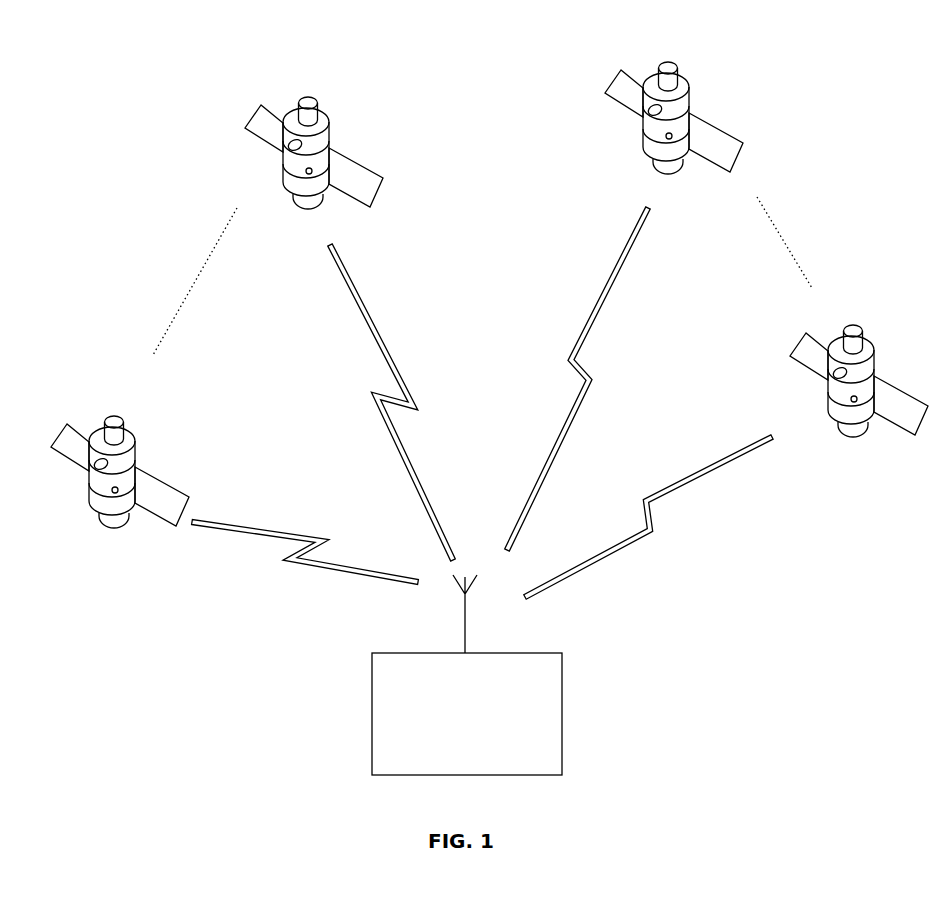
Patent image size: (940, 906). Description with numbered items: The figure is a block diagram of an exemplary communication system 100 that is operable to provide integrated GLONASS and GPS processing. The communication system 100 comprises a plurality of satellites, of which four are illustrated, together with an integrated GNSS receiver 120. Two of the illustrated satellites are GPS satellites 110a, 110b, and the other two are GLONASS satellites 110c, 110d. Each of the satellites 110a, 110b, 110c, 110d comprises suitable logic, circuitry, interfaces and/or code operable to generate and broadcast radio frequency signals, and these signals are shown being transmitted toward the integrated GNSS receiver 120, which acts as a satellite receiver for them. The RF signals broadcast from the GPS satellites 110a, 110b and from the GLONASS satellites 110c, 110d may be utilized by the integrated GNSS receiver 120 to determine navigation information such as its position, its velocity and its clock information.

The communication system 100 is at (72, 80).
The GPS satellite 110a is at (130, 459).
The GPS satellite 110b is at (294, 140).
The GLONASS satellite 110c is at (656, 105).
The GLONASS satellite 110d is at (840, 369).
The integrated GNSS receiver 120 is at (504, 675).